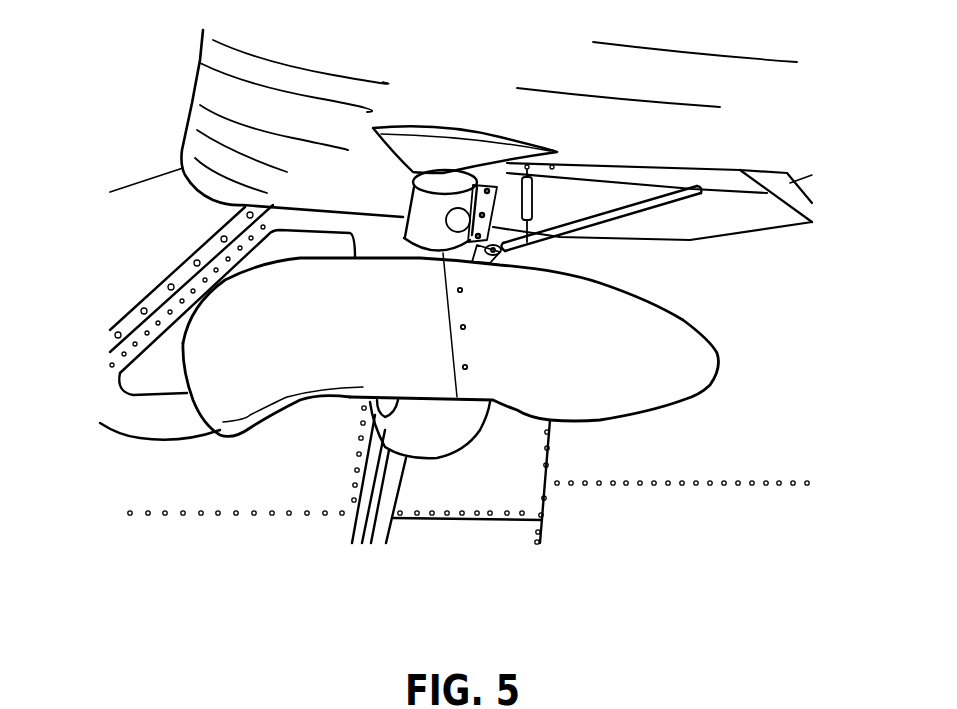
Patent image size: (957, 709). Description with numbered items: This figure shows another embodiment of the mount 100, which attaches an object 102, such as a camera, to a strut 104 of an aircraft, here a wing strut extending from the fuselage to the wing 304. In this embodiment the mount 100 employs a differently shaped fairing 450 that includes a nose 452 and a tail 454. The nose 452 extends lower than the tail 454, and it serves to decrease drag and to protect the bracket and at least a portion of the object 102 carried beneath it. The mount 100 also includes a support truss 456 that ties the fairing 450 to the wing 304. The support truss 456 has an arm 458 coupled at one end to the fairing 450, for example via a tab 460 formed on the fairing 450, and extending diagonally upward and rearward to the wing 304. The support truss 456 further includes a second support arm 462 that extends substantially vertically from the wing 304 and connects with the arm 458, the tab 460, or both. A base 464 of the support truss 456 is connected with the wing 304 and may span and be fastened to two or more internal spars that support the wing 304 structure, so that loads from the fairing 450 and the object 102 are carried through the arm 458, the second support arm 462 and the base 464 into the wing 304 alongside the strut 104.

The mount 100 is at (247, 217).
The object 102 is at (457, 440).
The strut 104 is at (353, 513).
The wing 304 is at (723, 107).
The fairing 450 is at (283, 300).
The nose 452 is at (227, 430).
The tail 454 is at (702, 363).
The support truss 456 is at (669, 223).
The arm 458 is at (600, 222).
The tab 460 is at (490, 260).
The second support arm 462 is at (707, 183).
The base 464 is at (527, 200).